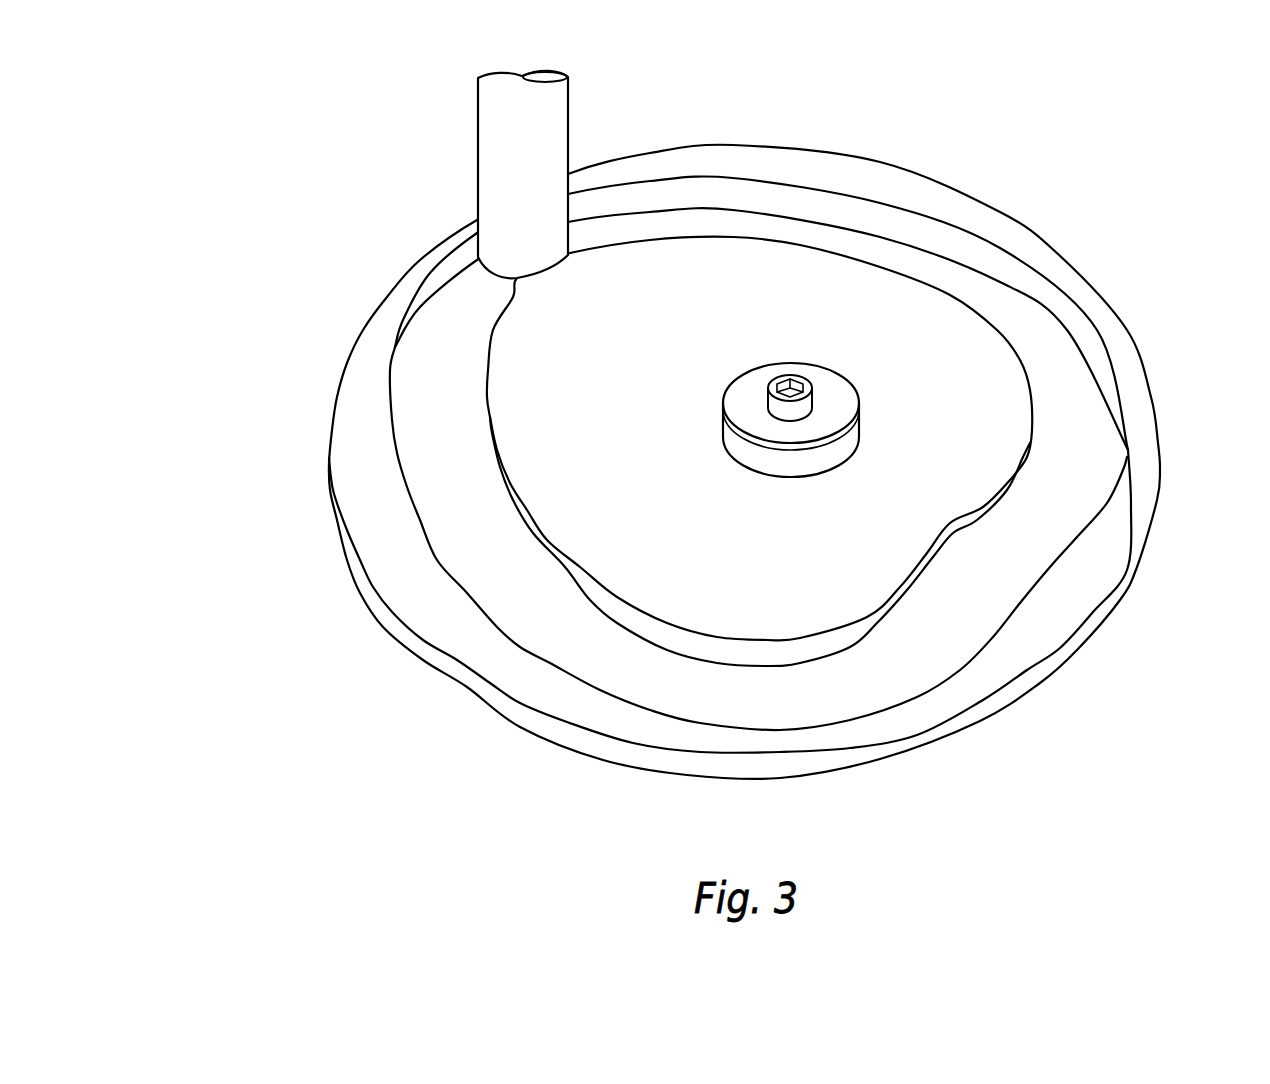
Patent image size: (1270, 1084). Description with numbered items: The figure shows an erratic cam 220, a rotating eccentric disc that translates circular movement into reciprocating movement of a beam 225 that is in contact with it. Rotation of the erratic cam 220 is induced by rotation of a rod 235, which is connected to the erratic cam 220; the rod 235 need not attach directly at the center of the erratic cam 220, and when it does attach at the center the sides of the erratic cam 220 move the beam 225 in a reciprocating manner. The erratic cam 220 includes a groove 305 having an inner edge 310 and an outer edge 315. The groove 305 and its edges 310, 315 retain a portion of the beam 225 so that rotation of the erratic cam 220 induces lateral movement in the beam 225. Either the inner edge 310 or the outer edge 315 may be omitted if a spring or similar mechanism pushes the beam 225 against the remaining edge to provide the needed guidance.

The erratic cam 220 is at (940, 447).
The beam 225 is at (508, 186).
The rod 235 is at (810, 403).
The groove 305 is at (1028, 338).
The inner edge 310 is at (565, 576).
The outer edge 315 is at (414, 517).